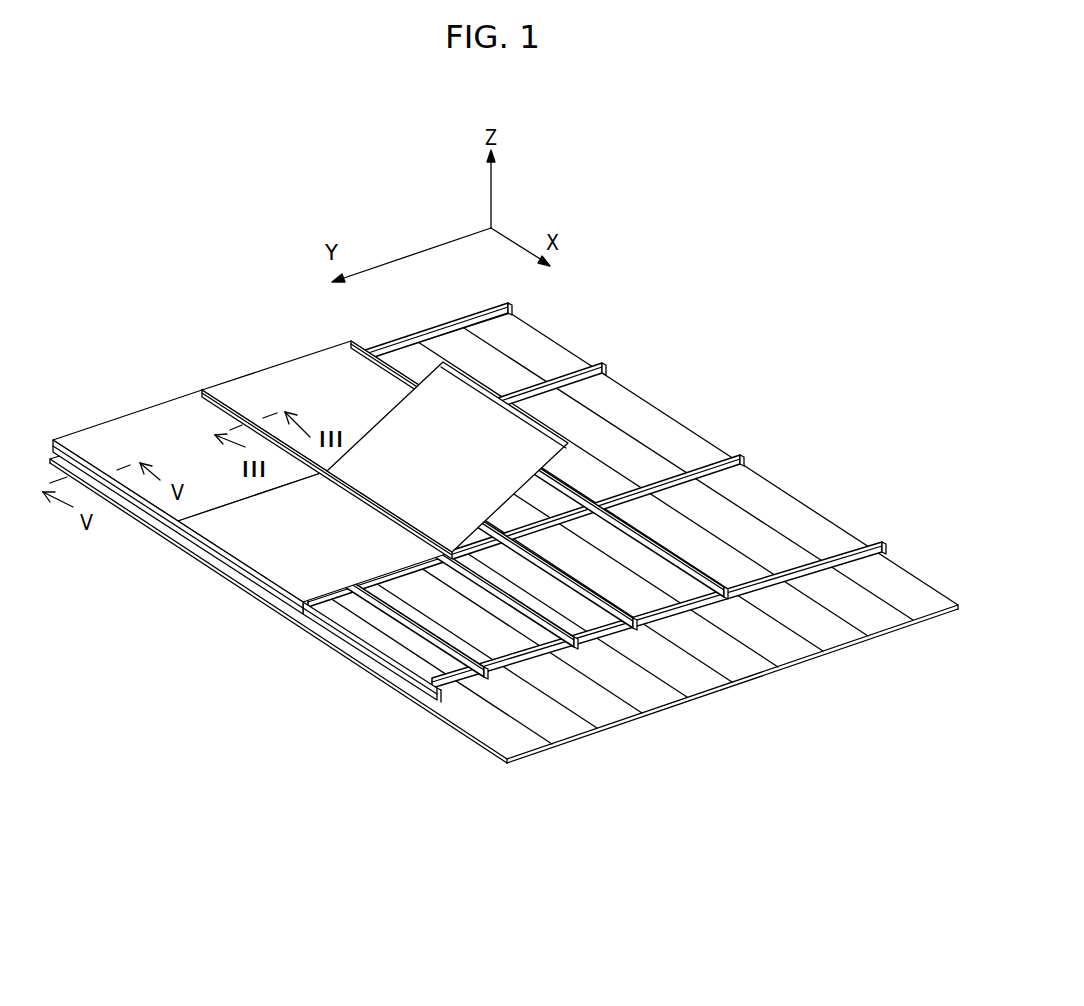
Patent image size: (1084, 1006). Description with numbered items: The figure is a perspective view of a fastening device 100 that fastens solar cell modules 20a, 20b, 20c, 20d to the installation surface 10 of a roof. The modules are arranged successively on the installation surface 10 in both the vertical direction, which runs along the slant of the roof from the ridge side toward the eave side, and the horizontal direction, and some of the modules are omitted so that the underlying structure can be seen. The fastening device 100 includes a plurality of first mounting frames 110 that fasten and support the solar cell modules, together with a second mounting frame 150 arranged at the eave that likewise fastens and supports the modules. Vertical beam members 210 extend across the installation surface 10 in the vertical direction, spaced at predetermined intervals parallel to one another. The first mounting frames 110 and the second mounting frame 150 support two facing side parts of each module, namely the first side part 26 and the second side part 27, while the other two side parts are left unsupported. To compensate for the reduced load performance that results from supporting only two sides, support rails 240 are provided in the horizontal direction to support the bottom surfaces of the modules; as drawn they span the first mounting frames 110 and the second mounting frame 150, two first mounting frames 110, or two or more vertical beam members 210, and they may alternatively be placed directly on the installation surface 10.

The installation surface 10 is at (640, 417).
The first mounting frame 110 is at (577, 640).
The vertical beam member 210 is at (507, 303).
The support rail 240 is at (453, 650).
The second mounting frame 150 is at (400, 668).
The fastening device 100 is at (310, 509).
The solar cell module 20a is at (95, 435).
The solar cell module 20b is at (250, 388).
The solar cell module 20c is at (250, 527).
The solar cell module 20d is at (380, 420).
The first side part 26 is at (143, 427).
The second side part 27 is at (60, 440).